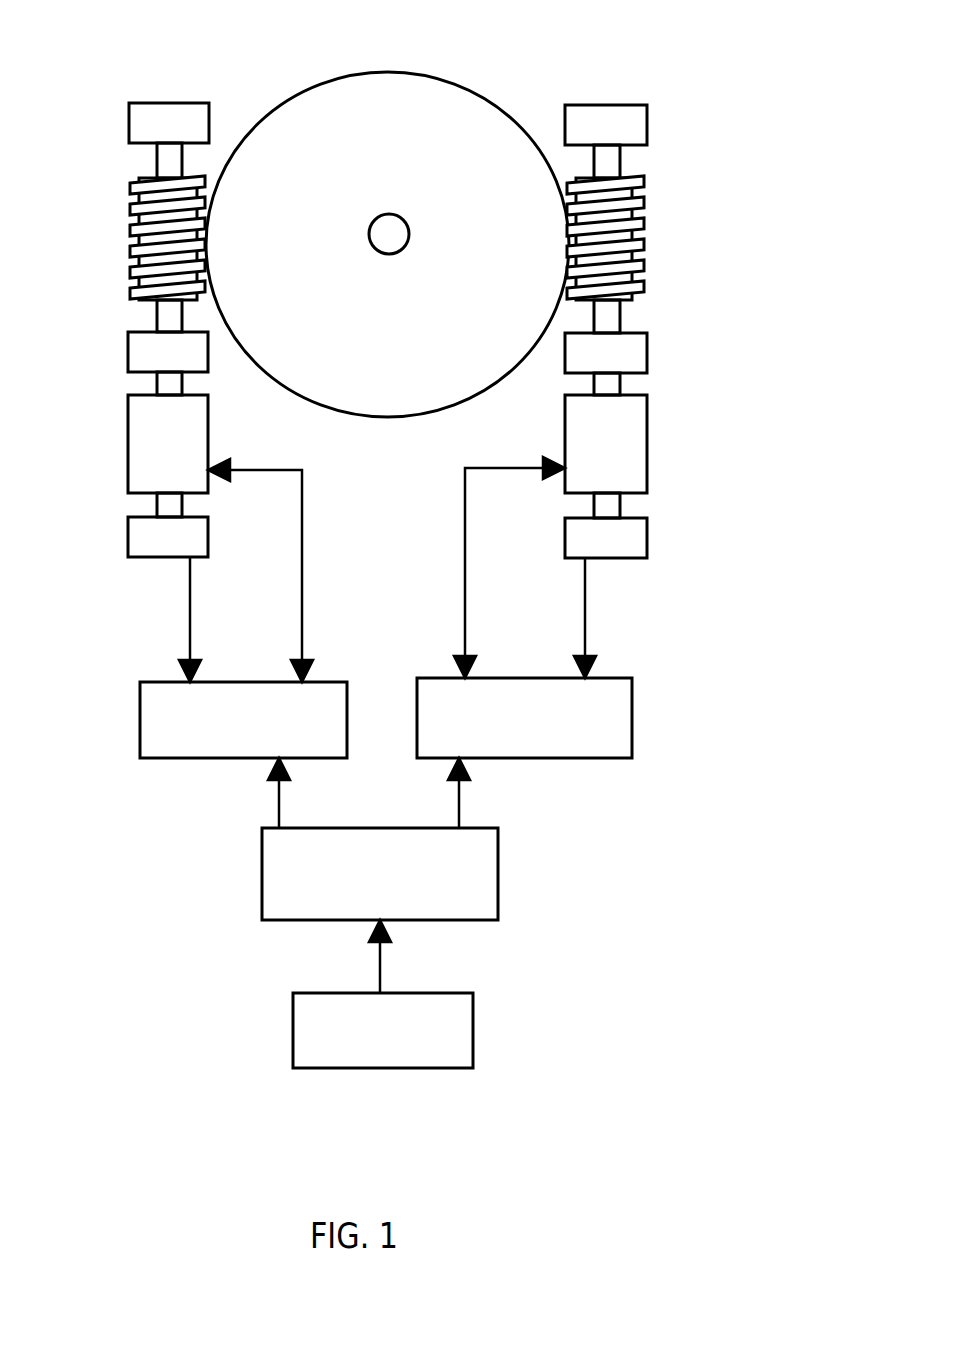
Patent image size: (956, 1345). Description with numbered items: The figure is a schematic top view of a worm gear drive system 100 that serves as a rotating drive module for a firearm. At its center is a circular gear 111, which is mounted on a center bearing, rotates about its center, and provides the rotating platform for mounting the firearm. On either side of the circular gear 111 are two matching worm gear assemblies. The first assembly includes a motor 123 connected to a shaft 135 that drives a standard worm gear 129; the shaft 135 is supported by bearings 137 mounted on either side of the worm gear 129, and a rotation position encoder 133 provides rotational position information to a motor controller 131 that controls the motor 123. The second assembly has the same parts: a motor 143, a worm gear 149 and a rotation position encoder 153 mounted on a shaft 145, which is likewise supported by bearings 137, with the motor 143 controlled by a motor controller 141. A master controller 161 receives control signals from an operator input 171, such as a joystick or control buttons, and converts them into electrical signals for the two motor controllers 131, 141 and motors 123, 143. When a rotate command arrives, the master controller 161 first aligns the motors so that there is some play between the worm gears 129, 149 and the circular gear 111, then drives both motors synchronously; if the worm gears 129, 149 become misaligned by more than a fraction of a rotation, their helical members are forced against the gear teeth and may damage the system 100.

The worm gear drive system 100 is at (725, 75).
The circular gear 111 is at (447, 102).
The bearings 137 is at (132, 117).
The worm gear 129 is at (130, 247).
The worm gear 149 is at (628, 235).
The motor 123 is at (140, 430).
The shaft 135 is at (173, 505).
The rotation position encoder 133 is at (133, 533).
The motor 143 is at (633, 428).
The shaft 145 is at (610, 508).
The rotation position encoder 153 is at (627, 550).
The motor controller 131 is at (150, 715).
The motor controller 141 is at (620, 702).
The master controller 161 is at (487, 873).
The operator input 171 is at (453, 1020).